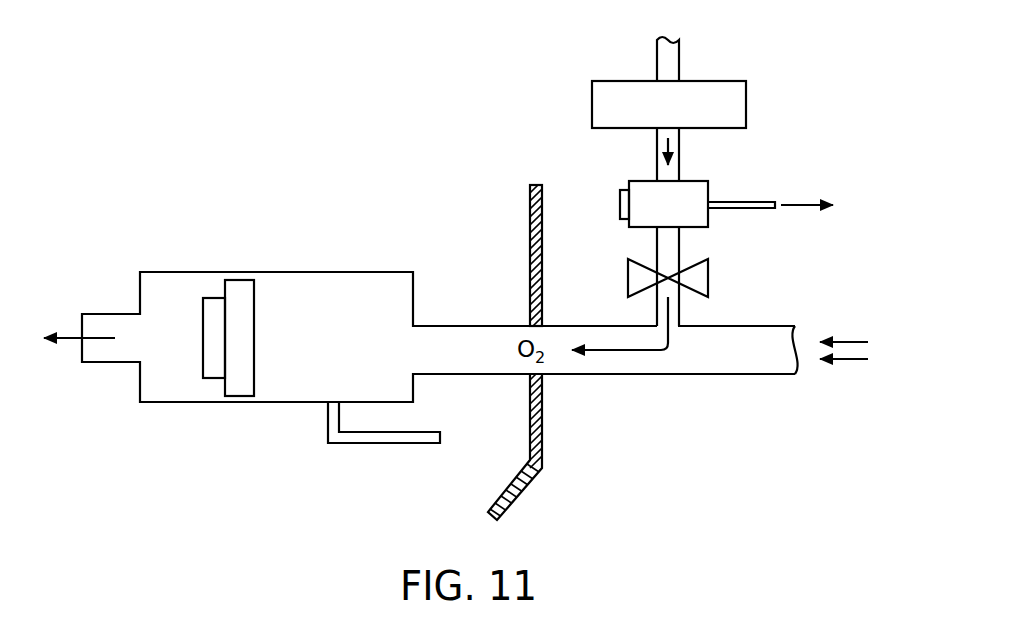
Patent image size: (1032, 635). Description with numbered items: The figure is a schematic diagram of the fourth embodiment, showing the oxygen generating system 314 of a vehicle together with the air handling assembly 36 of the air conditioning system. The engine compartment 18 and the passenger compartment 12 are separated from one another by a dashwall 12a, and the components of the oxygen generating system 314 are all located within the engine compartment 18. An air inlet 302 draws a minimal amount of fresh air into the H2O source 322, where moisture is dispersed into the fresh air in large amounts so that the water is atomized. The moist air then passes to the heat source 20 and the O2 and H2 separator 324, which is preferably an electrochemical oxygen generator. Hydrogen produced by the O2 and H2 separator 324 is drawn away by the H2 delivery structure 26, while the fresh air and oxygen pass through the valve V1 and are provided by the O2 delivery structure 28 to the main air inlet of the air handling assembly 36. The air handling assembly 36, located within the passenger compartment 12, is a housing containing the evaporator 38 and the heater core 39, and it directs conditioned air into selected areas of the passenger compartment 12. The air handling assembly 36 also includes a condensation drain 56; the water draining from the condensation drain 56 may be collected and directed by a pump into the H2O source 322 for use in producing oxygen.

The passenger compartment 12 is at (464, 288).
The dashwall 12a is at (528, 237).
The engine compartment 18 is at (577, 285).
The heat source 20 is at (620, 203).
The H2 delivery structure 26 is at (743, 208).
The O2 delivery structure 28 is at (708, 374).
The air handling assembly 36 is at (335, 272).
The evaporator 38 is at (240, 300).
The heater core 39 is at (213, 320).
The condensation drain 56 is at (378, 443).
The air inlet 302 is at (657, 55).
The oxygen generating system 314 is at (401, 193).
The H2O source 322 is at (746, 100).
The O2 and H2 separator 324 is at (695, 181).
The valve V1 is at (708, 278).